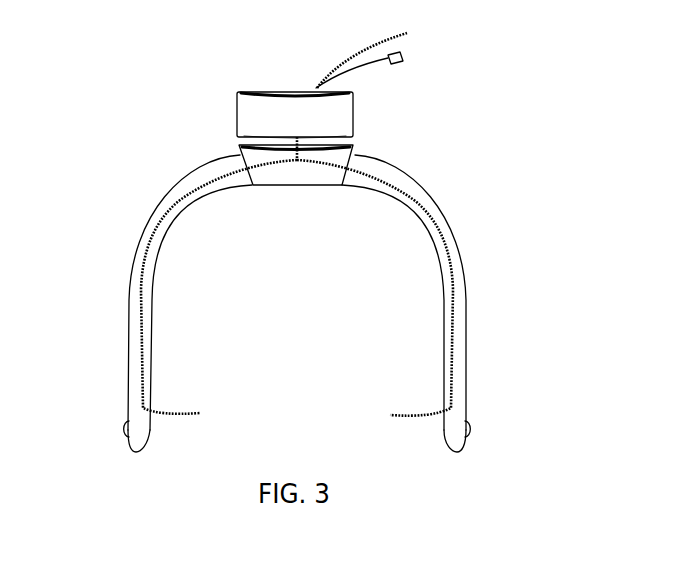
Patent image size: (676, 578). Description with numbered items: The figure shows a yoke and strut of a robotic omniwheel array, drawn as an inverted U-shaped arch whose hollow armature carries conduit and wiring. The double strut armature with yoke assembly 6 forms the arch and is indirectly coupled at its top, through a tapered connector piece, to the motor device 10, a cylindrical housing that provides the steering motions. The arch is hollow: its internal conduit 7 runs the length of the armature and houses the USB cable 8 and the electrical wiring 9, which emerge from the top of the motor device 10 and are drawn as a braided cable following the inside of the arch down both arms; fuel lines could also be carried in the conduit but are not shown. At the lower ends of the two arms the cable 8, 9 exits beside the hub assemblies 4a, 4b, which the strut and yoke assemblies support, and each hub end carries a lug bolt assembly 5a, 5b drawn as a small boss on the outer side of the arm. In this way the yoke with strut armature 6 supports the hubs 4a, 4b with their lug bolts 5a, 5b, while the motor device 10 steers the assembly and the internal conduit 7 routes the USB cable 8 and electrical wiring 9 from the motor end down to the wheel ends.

The hub assembly 4a is at (86, 413).
The hub assembly 4b is at (510, 413).
The lug bolt assembly 5a is at (120, 428).
The lug bolt assembly 5b is at (473, 427).
The double strut armature with yoke assembly 6 is at (296, 296).
The internal conduit 7 is at (182, 175).
The USB cable 8 is at (402, 60).
The electrical wiring 9 is at (313, 83).
The motor device 10 is at (247, 123).